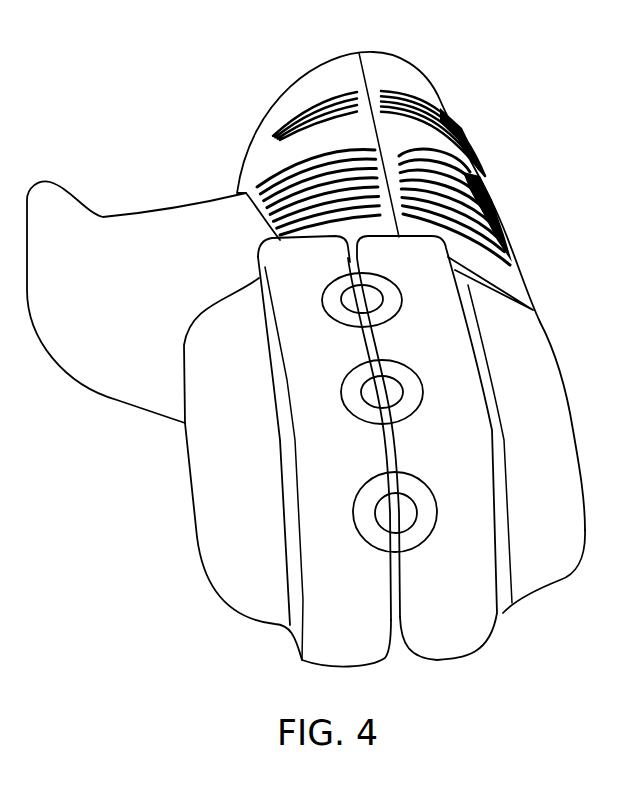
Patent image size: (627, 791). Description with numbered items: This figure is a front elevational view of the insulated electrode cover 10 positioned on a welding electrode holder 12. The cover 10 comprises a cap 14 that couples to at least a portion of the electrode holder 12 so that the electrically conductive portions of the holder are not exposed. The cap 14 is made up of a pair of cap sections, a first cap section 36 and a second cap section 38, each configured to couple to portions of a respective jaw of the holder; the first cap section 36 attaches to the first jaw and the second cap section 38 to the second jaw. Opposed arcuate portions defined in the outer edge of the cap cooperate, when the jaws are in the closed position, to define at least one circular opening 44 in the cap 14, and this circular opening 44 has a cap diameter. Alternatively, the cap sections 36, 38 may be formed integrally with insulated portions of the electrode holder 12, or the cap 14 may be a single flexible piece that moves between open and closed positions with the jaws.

The insulated electrode cover 10 is at (539, 195).
The welding electrode holder 12 is at (448, 120).
The cap 14 is at (559, 372).
The first cap section 36 is at (193, 533).
The second cap section 38 is at (567, 545).
The circular opening 44 is at (400, 510).